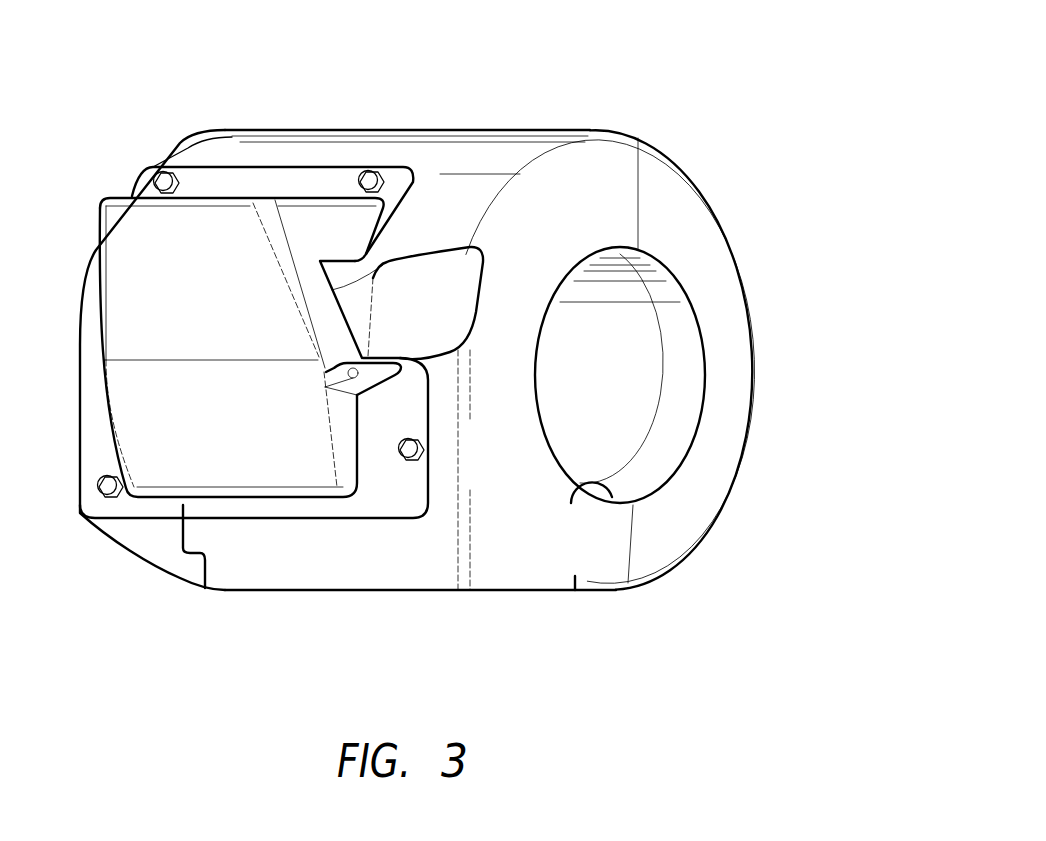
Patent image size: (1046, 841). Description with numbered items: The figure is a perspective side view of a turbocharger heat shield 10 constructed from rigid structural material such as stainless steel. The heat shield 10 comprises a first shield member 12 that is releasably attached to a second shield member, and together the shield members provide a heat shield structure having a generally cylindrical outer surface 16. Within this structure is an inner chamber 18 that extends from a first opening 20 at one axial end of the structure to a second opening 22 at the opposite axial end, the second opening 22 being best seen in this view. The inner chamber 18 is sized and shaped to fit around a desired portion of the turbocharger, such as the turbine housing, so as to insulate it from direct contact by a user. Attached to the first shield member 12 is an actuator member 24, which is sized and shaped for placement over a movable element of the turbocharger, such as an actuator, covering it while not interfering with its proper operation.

The turbocharger heat shield 10 is at (411, 327).
The first shield member 12 is at (690, 232).
The generally cylindrical outer surface 16 is at (557, 185).
The inner chamber 18 is at (660, 323).
The first opening 20 is at (540, 325).
The second opening 22 is at (606, 487).
The actuator member 24 is at (137, 326).